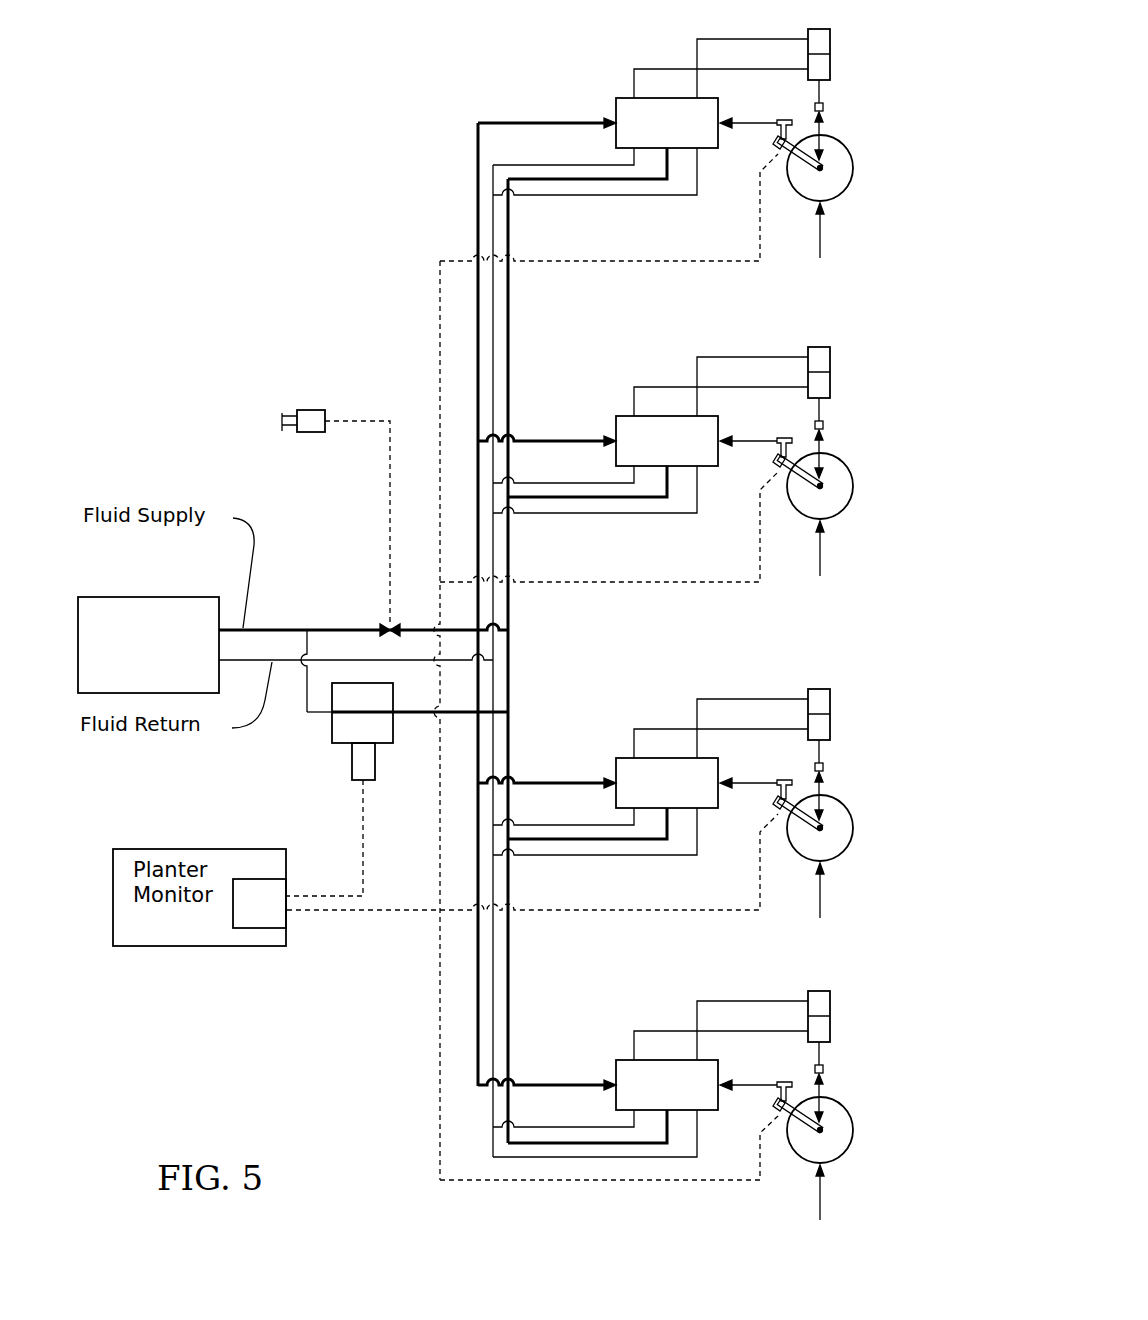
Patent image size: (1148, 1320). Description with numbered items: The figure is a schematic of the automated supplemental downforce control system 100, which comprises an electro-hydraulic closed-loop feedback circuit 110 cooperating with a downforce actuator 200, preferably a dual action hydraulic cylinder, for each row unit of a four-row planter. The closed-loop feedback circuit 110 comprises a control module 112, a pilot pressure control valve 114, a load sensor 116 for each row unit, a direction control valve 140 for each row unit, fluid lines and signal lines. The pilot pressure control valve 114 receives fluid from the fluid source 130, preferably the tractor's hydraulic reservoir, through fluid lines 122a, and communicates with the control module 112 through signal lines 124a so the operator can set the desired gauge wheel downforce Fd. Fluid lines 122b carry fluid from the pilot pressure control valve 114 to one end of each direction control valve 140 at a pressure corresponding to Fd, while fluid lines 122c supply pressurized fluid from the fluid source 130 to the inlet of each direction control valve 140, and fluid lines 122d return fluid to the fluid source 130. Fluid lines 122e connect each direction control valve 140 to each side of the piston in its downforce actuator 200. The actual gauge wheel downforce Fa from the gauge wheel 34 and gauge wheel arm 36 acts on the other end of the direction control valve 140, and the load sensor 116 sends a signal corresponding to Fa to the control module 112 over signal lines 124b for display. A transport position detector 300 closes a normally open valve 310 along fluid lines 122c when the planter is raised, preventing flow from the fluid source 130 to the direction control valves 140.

The automated supplemental downforce control system 100 is at (212, 100).
The closed-loop feedback circuit 110 is at (342, 238).
The control module 112 is at (260, 915).
The pilot pressure control valve 114 is at (345, 742).
The load sensor 116 is at (783, 155).
The fluid lines 122a is at (307, 713).
The fluid lines 122b is at (518, 122).
The fluid lines 122c is at (362, 628).
The fluid lines 122d is at (533, 166).
The fluid lines 122e is at (661, 67).
The signal lines 124a is at (363, 837).
The signal lines 124b is at (600, 261).
The fluid source 130 is at (165, 651).
The direction control valve 140 is at (683, 135).
The downforce actuator 200 is at (832, 42).
The transport position detector 300 is at (300, 410).
The valve 310 is at (382, 624).
The gauge wheel 34 is at (843, 150).
The gauge wheel arm 36 is at (810, 179).